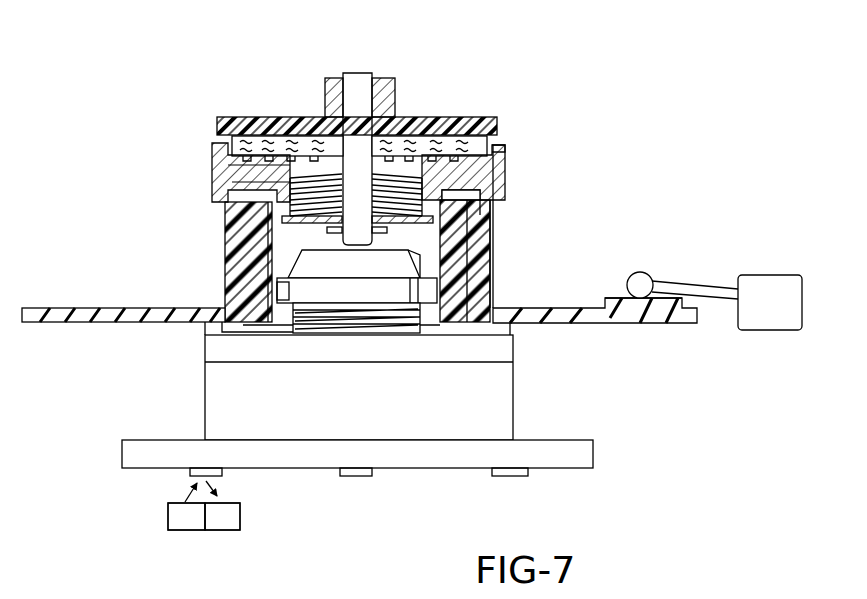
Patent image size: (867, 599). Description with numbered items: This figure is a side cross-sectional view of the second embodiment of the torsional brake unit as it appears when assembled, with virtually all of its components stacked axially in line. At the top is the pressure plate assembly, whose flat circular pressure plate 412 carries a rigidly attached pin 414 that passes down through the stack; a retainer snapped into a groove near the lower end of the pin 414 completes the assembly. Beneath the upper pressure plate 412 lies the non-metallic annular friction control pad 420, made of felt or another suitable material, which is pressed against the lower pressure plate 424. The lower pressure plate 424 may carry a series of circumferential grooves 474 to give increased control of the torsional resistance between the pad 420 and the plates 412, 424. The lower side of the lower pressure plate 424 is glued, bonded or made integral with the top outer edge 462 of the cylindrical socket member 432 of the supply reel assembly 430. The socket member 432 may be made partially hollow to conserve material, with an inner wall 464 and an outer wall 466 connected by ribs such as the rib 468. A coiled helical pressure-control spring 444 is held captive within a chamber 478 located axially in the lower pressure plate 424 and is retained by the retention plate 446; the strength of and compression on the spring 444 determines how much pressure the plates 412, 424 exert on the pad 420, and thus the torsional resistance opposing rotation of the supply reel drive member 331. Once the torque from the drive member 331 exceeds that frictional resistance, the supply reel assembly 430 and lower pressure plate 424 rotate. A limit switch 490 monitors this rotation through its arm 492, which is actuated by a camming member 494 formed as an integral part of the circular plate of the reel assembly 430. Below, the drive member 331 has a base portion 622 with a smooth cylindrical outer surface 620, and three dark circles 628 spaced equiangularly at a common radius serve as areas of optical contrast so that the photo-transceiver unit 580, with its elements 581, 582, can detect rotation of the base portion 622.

The supply reel drive member 331 is at (363, 295).
The pressure plate 412 is at (218, 120).
The pin 414 is at (355, 95).
The friction control pad 420 is at (295, 142).
The lower pressure plate 424 is at (507, 153).
The supply reel assembly 430 is at (590, 323).
The cylindrical socket member 432 is at (493, 247).
The pressure-control spring 444 is at (395, 170).
The retention plate 446 is at (313, 225).
The top outer edge 462 is at (487, 187).
The inner wall 464 is at (487, 215).
The outer wall 466 is at (495, 280).
The rib 468 is at (240, 268).
The circumferential grooves 474 is at (255, 165).
The chamber 478 is at (280, 182).
The limit switch 490 is at (765, 275).
The arm 492 is at (662, 280).
The camming member 494 is at (672, 310).
The photo-transceiver unit 580 is at (166, 512).
The sensor emitter 581 is at (185, 530).
The sensor detector 582 is at (227, 530).
The cylindrical outer surface 620 is at (205, 382).
The base portion 622 is at (170, 412).
The dark circles 628 is at (223, 470).